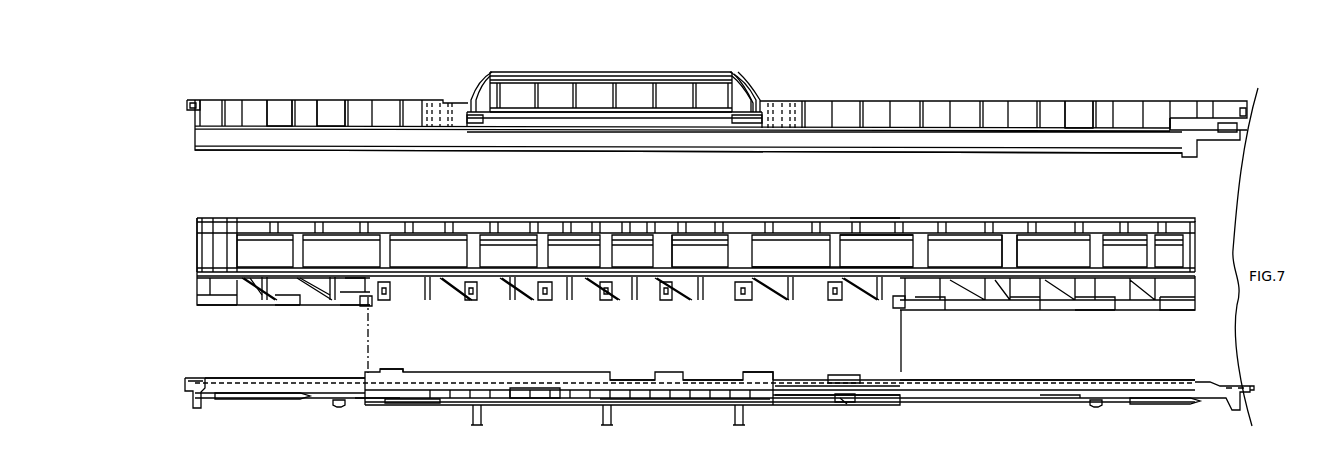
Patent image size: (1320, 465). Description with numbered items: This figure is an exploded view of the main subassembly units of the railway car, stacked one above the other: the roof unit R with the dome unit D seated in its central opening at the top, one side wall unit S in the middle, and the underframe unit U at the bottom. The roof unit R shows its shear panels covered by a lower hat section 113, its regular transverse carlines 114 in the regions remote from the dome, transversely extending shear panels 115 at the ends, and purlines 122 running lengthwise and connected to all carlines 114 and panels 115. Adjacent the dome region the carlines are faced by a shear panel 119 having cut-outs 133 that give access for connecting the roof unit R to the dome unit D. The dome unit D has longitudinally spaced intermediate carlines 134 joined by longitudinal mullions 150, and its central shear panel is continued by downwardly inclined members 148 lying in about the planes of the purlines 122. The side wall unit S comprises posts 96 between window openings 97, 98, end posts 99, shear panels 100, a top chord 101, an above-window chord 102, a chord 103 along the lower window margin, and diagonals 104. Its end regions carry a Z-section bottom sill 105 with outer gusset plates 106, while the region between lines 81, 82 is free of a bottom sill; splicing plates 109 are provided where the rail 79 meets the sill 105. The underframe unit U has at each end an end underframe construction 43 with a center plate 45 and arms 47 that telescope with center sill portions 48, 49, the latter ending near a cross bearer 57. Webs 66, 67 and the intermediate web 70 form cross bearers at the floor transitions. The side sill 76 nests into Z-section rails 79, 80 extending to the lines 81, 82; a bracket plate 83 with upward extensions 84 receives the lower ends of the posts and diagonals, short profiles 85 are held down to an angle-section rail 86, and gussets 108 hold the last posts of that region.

The roof unit R is at (968, 101).
The side wall unit S is at (962, 220).
The underframe unit U is at (968, 380).
The dome unit D is at (735, 74).
The lower hat section 113 is at (512, 140).
The transverse carline 114 is at (291, 102).
The transversely extending shear panel 115 is at (212, 92).
The shear panel 119 is at (455, 101).
The purline 122 is at (356, 99).
The cut-out 133 is at (478, 125).
The intermediate carline 134 is at (568, 98).
The downwardly inclined member 148 is at (752, 97).
The longitudinal rail or mullion 150 is at (690, 91).
The post 96 is at (1009, 232).
The window opening 97 is at (1056, 264).
The window opening 98 is at (683, 251).
The end post 99 is at (197, 248).
The shear panel 100 is at (220, 295).
The top chord 101 is at (874, 223).
The above-window chord 102 is at (878, 238).
The chord 103 is at (861, 275).
The diagonal 104 is at (575, 300).
The bottom sill 105 is at (262, 304).
The outer gusset plate 106 is at (297, 304).
The splicing plate 109 is at (370, 306).
The line 81 is at (366, 338).
The line 82 is at (902, 352).
The end underframe construction 43 is at (270, 396).
The center plate 45 is at (338, 405).
The arm 47 is at (372, 402).
The center sill portion 48 is at (411, 402).
The center sill portion 49 is at (969, 400).
The cross bearer 57 is at (843, 404).
The web 66 is at (483, 422).
The web 67 is at (745, 422).
The web 70 is at (612, 422).
The underframe side sill 76 is at (325, 380).
The Z-section rail 79 is at (813, 375).
The Z-section rail 80 is at (888, 396).
The bracket plate 83 is at (760, 377).
The upward extension 84 is at (655, 371).
The short profile 85 is at (530, 396).
The angle-section rail 86 is at (688, 403).
The gusset 108 is at (390, 371).